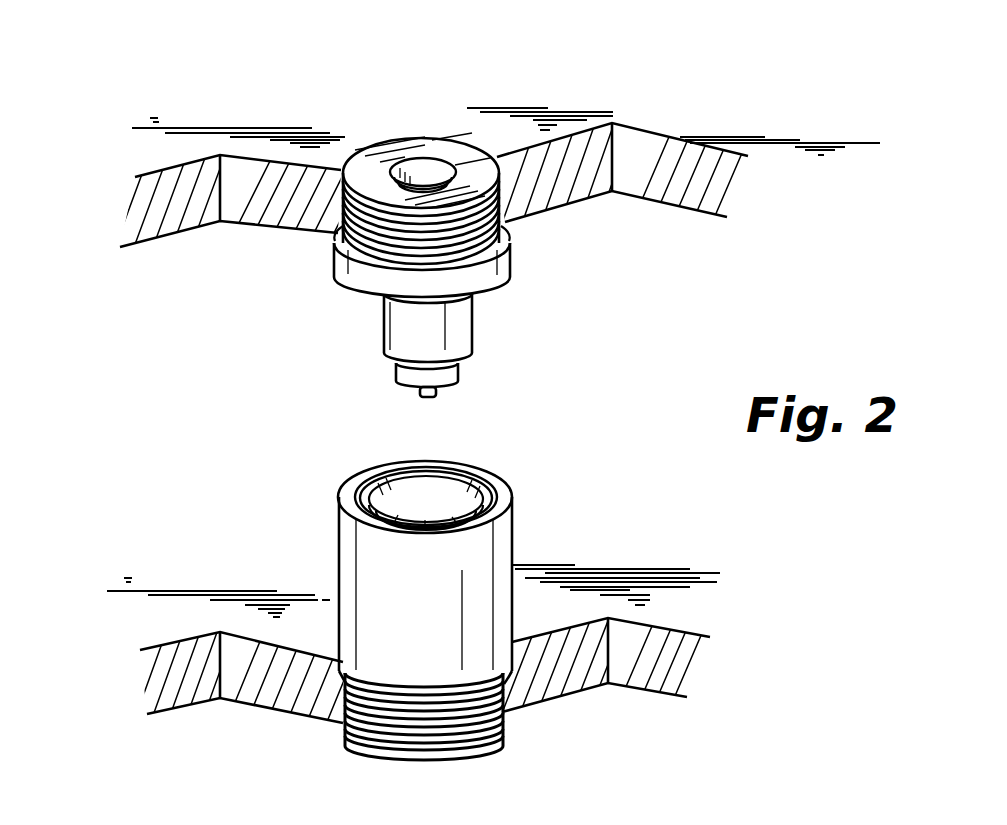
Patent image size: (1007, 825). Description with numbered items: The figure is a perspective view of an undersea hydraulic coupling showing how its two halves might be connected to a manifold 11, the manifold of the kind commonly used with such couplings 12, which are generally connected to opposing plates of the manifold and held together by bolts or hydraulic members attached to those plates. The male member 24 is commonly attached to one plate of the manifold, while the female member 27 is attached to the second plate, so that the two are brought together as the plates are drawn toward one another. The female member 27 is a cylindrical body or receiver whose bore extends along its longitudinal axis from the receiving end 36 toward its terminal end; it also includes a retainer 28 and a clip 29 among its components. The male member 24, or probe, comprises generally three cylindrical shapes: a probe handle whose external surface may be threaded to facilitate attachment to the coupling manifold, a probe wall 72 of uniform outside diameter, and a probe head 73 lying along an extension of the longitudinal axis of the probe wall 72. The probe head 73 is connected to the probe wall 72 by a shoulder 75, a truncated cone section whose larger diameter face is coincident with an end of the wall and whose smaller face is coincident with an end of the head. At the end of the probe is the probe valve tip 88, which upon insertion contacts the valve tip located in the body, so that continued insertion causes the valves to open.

The manifold 11 is at (233, 250).
The couplings 12 is at (590, 350).
The male member 24 is at (352, 330).
The female member 27 is at (320, 562).
The retainer 28 is at (455, 505).
The clip 29 is at (357, 488).
The receiving end 36 is at (507, 488).
The probe wall 72 is at (473, 325).
The probe head 73 is at (453, 383).
The shoulder 75 is at (462, 365).
The probe valve tip 88 is at (440, 163).